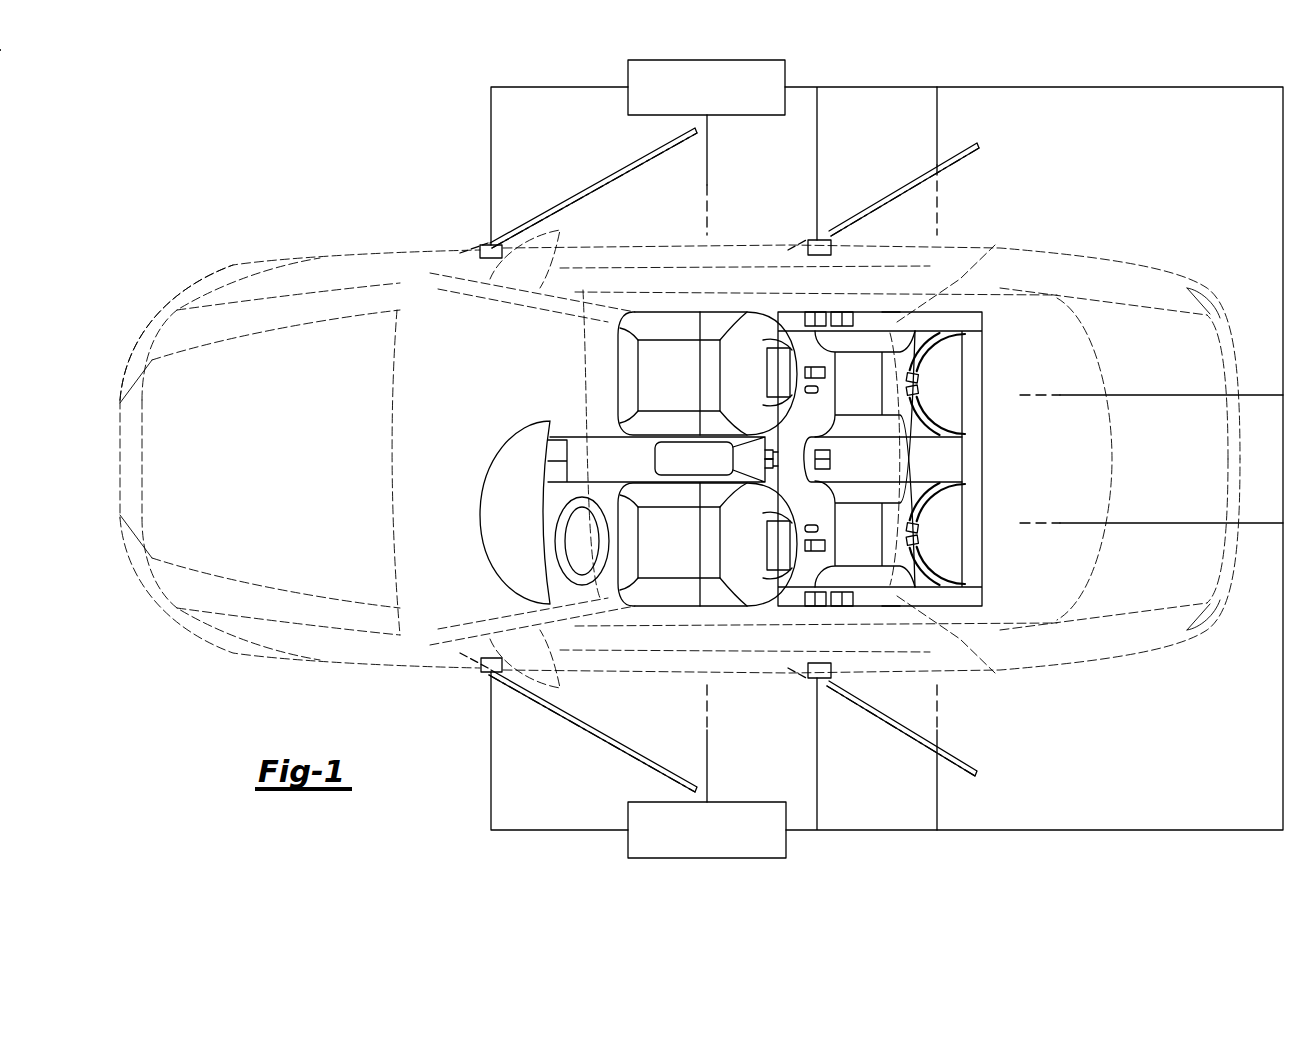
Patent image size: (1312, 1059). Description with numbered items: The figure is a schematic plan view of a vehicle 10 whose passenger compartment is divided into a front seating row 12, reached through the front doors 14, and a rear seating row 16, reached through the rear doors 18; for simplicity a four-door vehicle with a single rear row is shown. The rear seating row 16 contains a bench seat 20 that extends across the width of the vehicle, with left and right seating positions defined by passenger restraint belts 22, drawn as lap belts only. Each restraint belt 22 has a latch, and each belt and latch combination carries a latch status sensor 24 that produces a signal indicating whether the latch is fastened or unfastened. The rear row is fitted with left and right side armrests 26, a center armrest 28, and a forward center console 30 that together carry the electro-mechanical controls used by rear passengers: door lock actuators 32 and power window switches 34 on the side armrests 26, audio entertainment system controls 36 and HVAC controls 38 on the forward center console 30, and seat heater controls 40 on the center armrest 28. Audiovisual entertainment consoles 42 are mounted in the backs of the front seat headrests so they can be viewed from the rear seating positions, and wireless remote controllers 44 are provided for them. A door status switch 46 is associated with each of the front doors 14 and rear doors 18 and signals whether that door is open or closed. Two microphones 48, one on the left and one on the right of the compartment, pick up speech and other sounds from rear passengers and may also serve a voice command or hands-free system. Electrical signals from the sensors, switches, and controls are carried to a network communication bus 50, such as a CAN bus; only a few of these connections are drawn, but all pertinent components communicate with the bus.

The vehicle 10 is at (250, 243).
The front seating row 12 is at (682, 330).
The front doors 14 is at (570, 186).
The rear seating row 16 is at (975, 300).
The rear doors 18 is at (880, 195).
The bench seat 20 is at (940, 510).
The passenger restraint belts 22 is at (930, 342).
The latch status sensor 24 is at (920, 378).
The side armrests 26 is at (863, 320).
The center armrest 28 is at (940, 460).
The forward center console 30 is at (670, 458).
The door lock actuators 32 is at (810, 312).
The power window switches 34 is at (840, 312).
The audio entertainment system controls 36 is at (775, 452).
The HVAC controls 38 is at (775, 466).
The seat heater controls 40 is at (832, 459).
The audiovisual entertainment consoles 42 is at (772, 375).
The wireless remote controllers 44 is at (826, 372).
The door status switch 46 is at (488, 243).
The microphones 48 is at (818, 389).
The network communication bus 50 is at (628, 98).